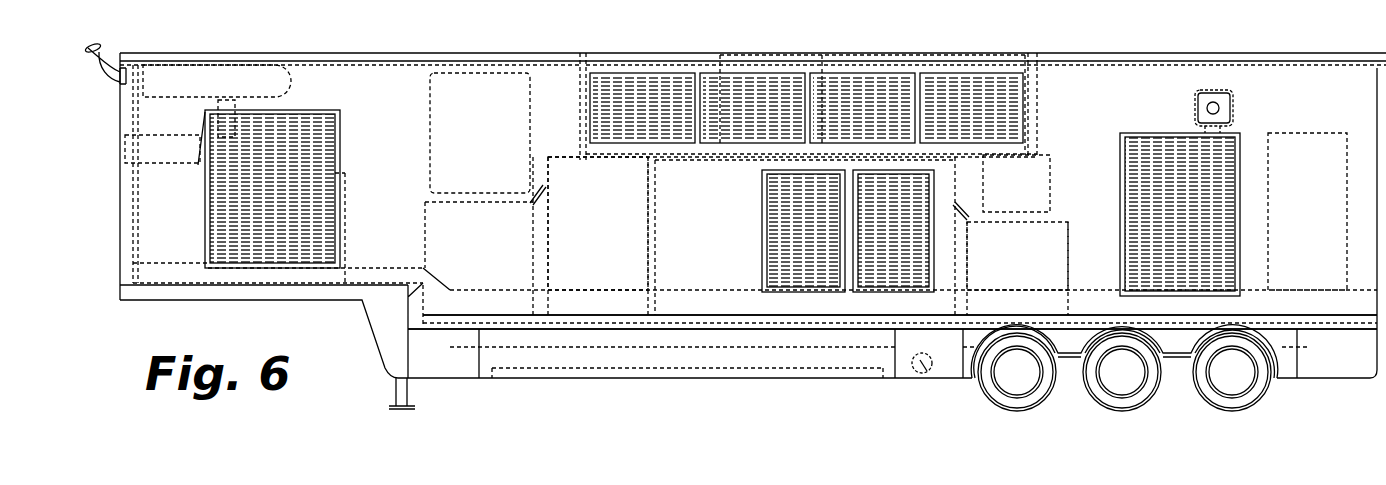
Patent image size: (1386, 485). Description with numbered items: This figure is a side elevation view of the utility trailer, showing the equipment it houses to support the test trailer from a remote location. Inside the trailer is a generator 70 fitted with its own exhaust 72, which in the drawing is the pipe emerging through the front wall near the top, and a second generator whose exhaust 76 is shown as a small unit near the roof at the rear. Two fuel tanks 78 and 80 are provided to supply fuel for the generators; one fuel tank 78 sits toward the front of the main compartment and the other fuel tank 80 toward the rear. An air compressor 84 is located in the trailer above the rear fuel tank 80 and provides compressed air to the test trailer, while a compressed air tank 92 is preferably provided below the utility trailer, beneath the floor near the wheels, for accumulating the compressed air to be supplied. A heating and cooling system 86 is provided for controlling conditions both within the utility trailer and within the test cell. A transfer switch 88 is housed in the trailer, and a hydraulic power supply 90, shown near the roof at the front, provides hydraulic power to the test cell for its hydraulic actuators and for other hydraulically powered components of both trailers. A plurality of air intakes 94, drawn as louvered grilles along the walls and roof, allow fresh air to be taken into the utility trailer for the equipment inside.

The generator 70 is at (155, 194).
The exhaust 72 is at (110, 76).
The exhaust 76 is at (1219, 108).
The fuel tank 78 is at (440, 218).
The fuel tank 80 is at (1038, 248).
The air compressor 84 is at (1023, 178).
The heating and cooling system 86 is at (690, 272).
The transfer switch 88 is at (565, 171).
The hydraulic power supply 90 is at (475, 88).
The compressed air tank 92 is at (928, 374).
The air intakes 94 is at (325, 132).